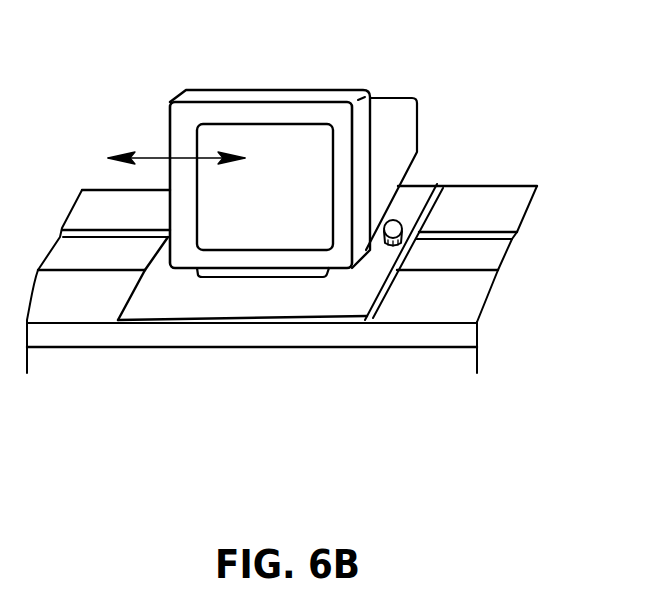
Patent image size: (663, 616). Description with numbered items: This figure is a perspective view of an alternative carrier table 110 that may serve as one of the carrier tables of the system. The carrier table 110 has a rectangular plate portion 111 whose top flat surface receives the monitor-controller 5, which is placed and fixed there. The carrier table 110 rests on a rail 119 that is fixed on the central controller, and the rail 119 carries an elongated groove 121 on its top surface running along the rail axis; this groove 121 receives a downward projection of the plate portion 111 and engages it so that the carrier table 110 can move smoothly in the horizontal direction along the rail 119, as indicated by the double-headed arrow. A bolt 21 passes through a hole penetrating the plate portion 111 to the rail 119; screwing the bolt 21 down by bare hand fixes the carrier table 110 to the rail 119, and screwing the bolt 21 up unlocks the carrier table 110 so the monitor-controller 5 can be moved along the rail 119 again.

The monitor-controller 5 is at (260, 90).
The bolt 21 is at (395, 221).
The carrier table 110 is at (222, 325).
The plate portion 111 is at (293, 302).
The rail 119 is at (423, 303).
The groove 121 is at (497, 255).